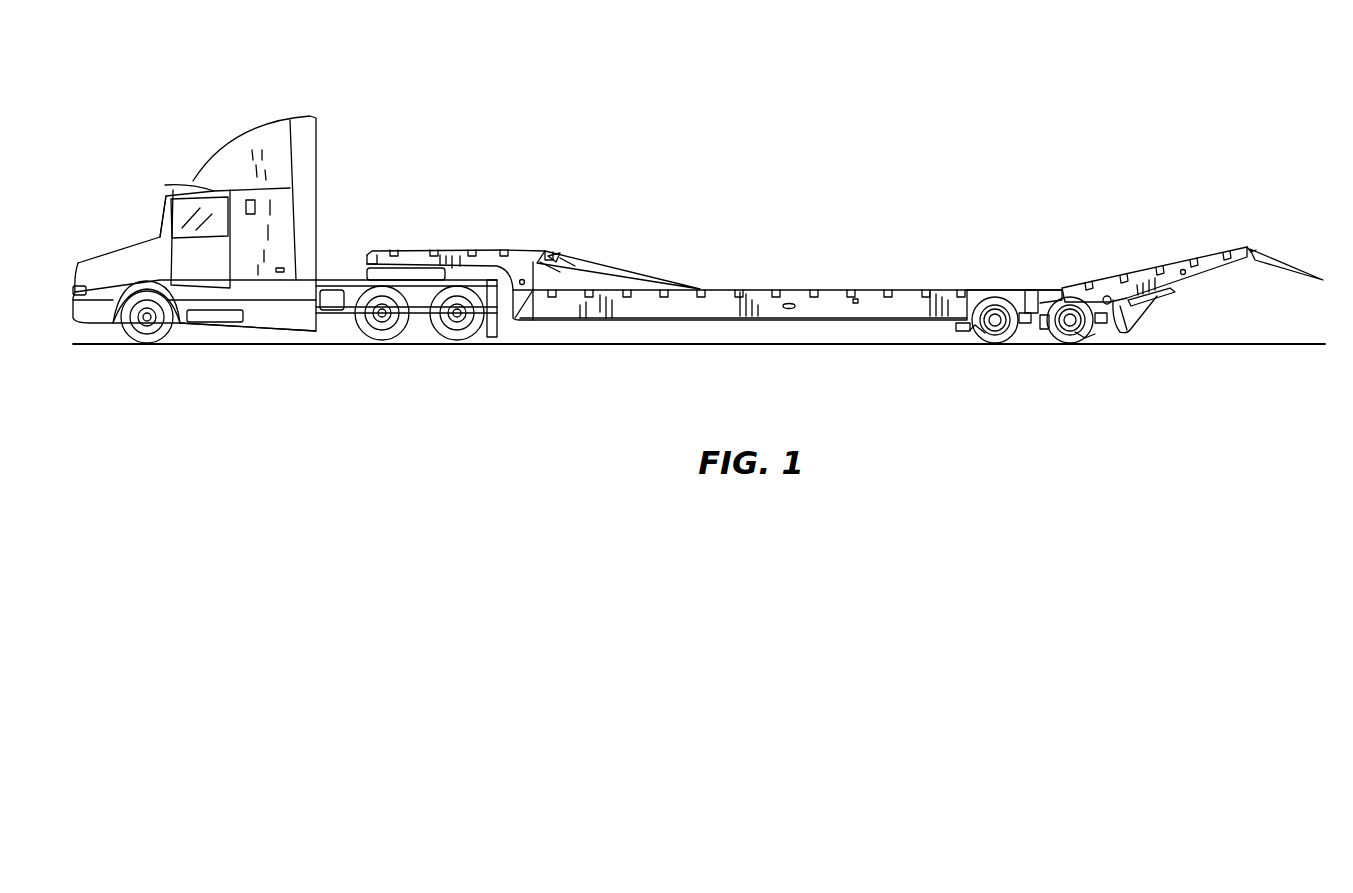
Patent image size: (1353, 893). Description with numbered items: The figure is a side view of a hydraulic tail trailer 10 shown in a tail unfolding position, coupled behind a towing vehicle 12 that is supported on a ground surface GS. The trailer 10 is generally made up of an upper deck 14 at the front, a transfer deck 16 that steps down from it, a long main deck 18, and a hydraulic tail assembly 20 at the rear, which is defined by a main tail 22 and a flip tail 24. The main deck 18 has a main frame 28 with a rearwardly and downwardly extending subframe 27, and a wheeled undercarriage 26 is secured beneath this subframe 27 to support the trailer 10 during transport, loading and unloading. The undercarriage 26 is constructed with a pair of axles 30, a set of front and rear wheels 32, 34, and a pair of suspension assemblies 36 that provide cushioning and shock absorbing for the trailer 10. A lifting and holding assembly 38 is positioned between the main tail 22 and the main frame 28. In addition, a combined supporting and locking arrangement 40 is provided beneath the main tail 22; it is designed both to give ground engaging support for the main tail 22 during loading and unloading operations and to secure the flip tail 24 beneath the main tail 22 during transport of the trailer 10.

The hydraulic tail trailer 10 is at (853, 259).
The towing vehicle 12 is at (225, 127).
The upper deck 14 is at (477, 238).
The transfer deck 16 is at (613, 258).
The main deck 18 is at (930, 277).
The hydraulic tail assembly 20 is at (1201, 231).
The main tail 22 is at (1153, 250).
The flip tail 24 is at (1308, 260).
The wheeled undercarriage 26 is at (1038, 338).
The subframe 27 is at (1107, 296).
The main frame 28 is at (768, 322).
The axles 30 is at (997, 333).
The front wheels 32 is at (978, 331).
The rear wheels 34 is at (1080, 340).
The suspension assemblies 36 is at (1027, 333).
The lifting and holding assembly 38 is at (1152, 316).
The combined supporting and locking arrangement 40 is at (1187, 303).
The ground surface GS is at (582, 346).